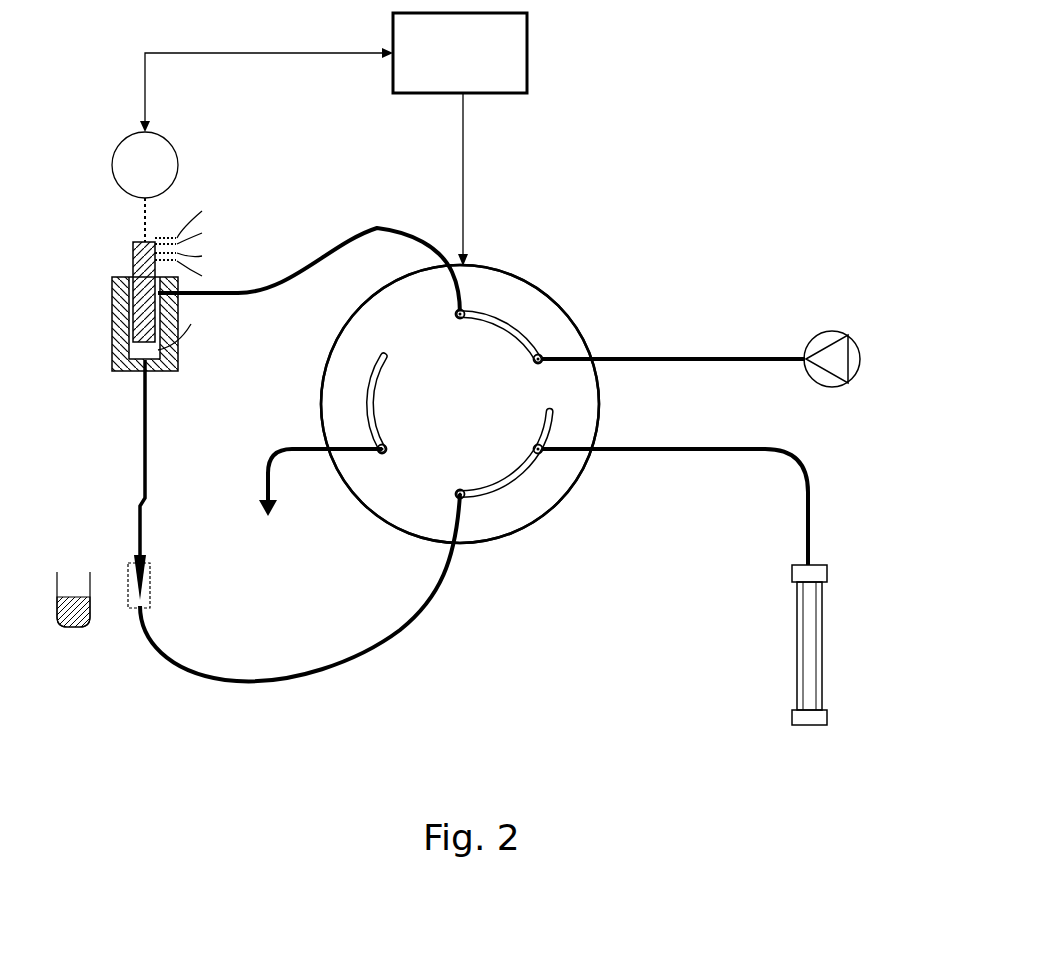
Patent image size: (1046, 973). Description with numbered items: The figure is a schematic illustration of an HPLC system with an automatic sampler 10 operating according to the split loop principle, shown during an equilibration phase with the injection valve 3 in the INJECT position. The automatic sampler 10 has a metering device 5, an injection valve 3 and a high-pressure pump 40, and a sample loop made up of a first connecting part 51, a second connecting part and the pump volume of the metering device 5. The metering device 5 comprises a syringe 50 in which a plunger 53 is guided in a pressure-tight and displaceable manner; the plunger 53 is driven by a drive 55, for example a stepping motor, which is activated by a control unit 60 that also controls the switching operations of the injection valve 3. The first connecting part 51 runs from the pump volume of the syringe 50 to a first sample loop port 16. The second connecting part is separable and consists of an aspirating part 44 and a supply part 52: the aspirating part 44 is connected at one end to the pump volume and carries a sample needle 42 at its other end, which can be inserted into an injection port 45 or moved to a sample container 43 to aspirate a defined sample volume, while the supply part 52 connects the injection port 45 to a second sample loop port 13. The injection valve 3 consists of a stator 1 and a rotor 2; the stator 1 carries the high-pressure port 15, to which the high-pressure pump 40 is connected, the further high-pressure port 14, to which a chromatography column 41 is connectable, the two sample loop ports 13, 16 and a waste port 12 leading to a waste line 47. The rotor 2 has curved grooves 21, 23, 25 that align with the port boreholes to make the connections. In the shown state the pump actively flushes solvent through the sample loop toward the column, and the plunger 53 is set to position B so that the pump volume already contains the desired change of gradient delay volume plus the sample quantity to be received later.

The stator 1 is at (322, 391).
The rotor 2 is at (460, 404).
The injection valve 3 is at (551, 521).
The metering device 5 is at (102, 210).
The automatic sampler 10 is at (624, 222).
The waste port 12 is at (379, 455).
The second sample loop port 13 is at (456, 500).
The further high-pressure port 14 is at (544, 453).
The high-pressure port 15 is at (546, 357).
The first sample loop port 16 is at (462, 306).
The groove 21 is at (500, 334).
The groove 23 is at (386, 404).
The groove 25 is at (524, 467).
The high-pressure pump 40 is at (810, 379).
The chromatography column 41 is at (822, 628).
The sample needle 42 is at (136, 565).
The sample container 43 is at (68, 628).
The aspirating part 44 is at (143, 418).
The injection port 45 is at (151, 590).
The waste line 47 is at (262, 490).
The syringe 50 is at (112, 330).
The first connecting part 51 is at (385, 226).
The supply part 52 is at (403, 630).
The plunger 53 is at (132, 248).
The drive 55 is at (178, 165).
The control unit 60 is at (507, 53).